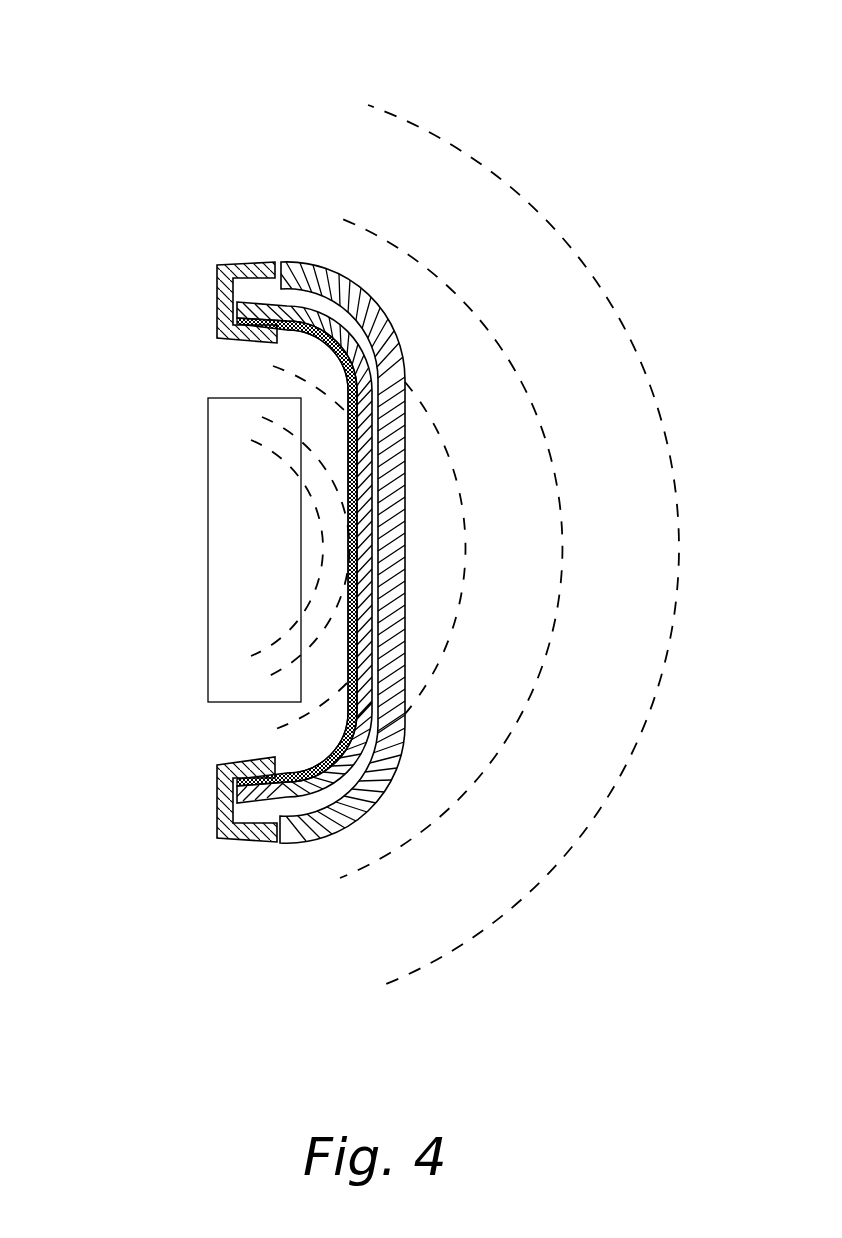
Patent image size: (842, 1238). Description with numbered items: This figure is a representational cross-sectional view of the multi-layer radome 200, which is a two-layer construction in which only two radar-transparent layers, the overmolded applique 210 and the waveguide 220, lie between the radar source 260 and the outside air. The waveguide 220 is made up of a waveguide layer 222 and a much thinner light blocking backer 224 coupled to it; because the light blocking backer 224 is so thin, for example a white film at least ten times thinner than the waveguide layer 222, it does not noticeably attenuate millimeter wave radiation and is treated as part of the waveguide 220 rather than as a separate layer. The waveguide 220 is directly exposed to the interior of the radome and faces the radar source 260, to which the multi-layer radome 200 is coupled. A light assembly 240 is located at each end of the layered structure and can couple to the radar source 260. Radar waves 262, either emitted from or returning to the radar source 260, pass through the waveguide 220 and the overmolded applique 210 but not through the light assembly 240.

The multi-layer radome 200 is at (187, 160).
The overmolded applique 210 is at (357, 296).
The waveguide 220 is at (292, 307).
The waveguide layer 222 is at (262, 306).
The light blocking backer 224 is at (332, 351).
The light assembly 240 is at (218, 302).
The radar source 260 is at (240, 557).
The radar waves 262 is at (613, 785).